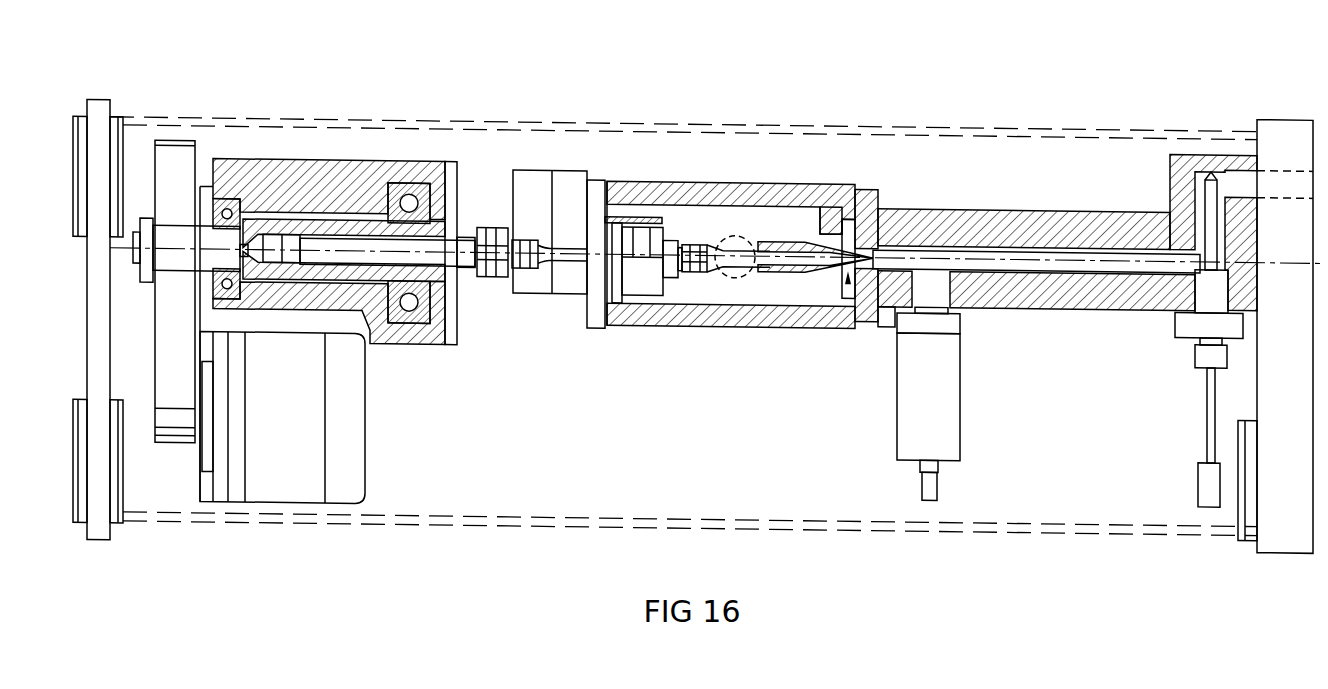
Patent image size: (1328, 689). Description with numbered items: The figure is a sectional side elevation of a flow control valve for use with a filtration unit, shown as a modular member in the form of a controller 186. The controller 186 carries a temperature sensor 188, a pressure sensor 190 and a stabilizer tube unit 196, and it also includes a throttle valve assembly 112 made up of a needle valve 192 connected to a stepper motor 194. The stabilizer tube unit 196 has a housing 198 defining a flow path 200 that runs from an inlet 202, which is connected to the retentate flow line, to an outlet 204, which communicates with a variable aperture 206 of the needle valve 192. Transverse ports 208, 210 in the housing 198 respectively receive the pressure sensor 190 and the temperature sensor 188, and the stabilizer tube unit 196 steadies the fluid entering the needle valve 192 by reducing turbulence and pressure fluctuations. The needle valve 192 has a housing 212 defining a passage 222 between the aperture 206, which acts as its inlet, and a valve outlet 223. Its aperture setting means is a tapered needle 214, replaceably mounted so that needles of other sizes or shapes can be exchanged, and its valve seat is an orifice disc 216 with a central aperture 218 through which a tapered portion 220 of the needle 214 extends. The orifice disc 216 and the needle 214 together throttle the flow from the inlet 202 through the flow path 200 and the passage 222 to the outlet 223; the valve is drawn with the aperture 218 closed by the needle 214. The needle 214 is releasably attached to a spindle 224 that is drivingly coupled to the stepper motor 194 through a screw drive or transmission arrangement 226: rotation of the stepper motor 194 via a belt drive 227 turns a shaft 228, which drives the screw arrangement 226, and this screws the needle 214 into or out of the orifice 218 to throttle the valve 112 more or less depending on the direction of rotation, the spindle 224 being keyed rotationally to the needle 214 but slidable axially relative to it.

The controller 186 is at (348, 70).
The shaft 228 is at (355, 245).
The throttle valve assembly 112 is at (638, 166).
The valve outlet 223 is at (737, 228).
The needle valve 192 is at (748, 237).
The housing 212 is at (708, 185).
The variable aperture 206 is at (832, 203).
The tapered portion 220 is at (851, 257).
The outlet 204 is at (1036, 266).
The housing 198 is at (1036, 254).
The stabilizer tube unit 196 is at (1118, 190).
The transverse port 210 is at (1212, 196).
The inlet 202 is at (1280, 165).
The belt drive 227 is at (163, 330).
The screw arrangement 226 is at (550, 264).
The spindle 224 is at (697, 280).
The passage 222 is at (745, 284).
The tapered needle 214 is at (797, 268).
The central aperture 218 is at (841, 292).
The orifice disc 216 is at (852, 300).
The transverse port 208 is at (955, 284).
The flow path 200 is at (1112, 258).
The pressure sensor 190 is at (948, 414).
The temperature sensor 188 is at (1210, 387).
The stepper motor 194 is at (313, 505).